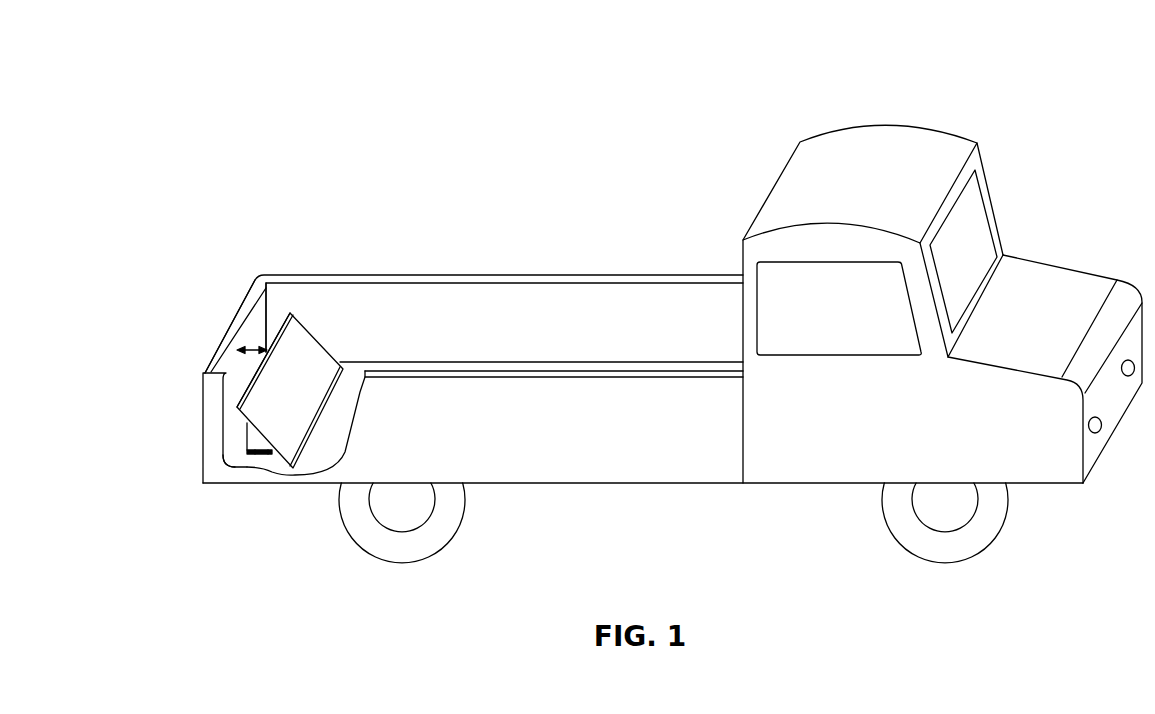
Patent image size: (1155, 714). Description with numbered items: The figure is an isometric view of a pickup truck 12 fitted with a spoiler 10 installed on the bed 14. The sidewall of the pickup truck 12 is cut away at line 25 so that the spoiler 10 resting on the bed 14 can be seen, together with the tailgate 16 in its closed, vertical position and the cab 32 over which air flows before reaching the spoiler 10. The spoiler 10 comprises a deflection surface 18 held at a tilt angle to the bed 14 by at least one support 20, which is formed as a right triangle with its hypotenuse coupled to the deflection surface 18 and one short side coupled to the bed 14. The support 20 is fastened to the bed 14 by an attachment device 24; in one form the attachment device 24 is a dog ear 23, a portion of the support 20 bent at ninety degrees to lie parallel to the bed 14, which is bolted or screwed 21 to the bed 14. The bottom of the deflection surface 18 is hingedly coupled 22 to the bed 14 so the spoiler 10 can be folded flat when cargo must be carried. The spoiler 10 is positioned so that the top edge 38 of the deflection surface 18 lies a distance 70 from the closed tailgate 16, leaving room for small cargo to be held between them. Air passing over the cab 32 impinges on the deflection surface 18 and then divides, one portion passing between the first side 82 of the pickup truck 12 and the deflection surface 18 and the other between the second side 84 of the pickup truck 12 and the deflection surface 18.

The spoiler 10 is at (302, 302).
The pickup truck 12 is at (1052, 285).
The bed 14 is at (350, 378).
The tailgate 16 is at (256, 318).
The deflection surface 18 is at (257, 392).
The support 20 is at (247, 442).
The screw 21 is at (268, 453).
The hinged coupling 22 is at (337, 367).
The dog ear 23 is at (262, 453).
The attachment device 24 is at (248, 453).
The cut-away line 25 is at (222, 453).
The cab 32 is at (908, 153).
The top edge 38 is at (283, 327).
The distance 70 is at (235, 346).
The first side 82 is at (622, 420).
The second side 84 is at (598, 310).